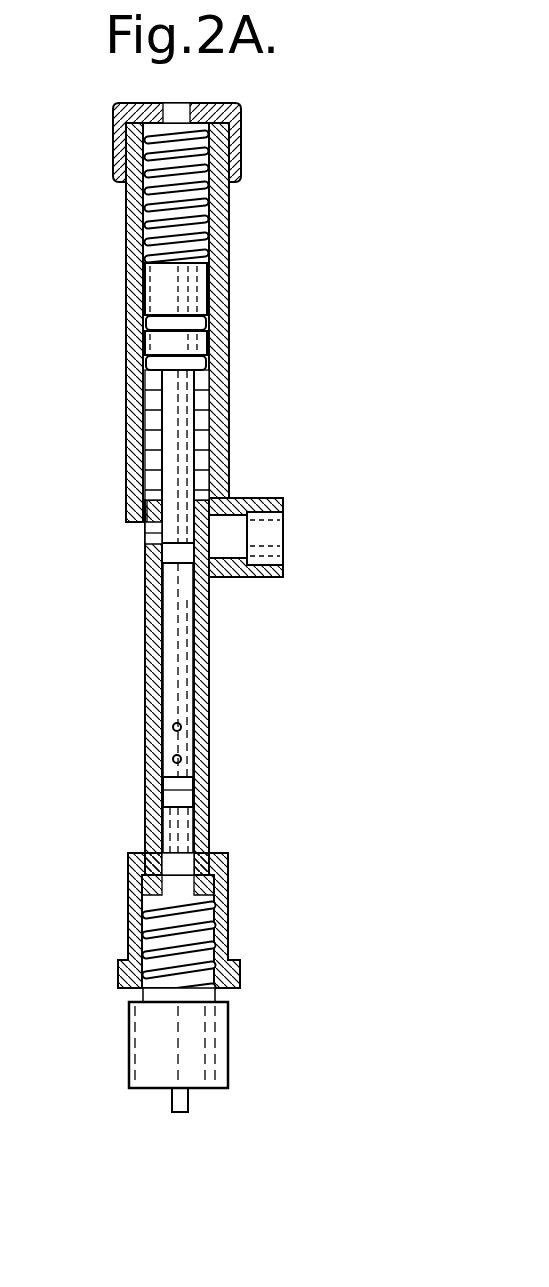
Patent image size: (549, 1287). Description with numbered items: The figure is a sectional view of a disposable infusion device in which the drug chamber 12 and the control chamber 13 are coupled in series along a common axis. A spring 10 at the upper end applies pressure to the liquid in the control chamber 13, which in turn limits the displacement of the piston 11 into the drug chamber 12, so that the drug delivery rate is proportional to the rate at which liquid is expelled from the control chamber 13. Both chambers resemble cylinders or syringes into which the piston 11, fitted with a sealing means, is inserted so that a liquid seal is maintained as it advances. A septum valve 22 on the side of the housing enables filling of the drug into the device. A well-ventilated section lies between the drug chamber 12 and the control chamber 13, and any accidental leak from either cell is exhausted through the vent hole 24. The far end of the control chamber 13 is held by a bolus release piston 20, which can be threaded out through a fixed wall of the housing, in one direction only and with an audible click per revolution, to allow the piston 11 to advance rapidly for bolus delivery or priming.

The spring 10 is at (150, 221).
The piston 11 is at (170, 417).
The drug chamber 12 is at (150, 437).
The control chamber 13 is at (177, 690).
The bolus release piston 20 is at (163, 1046).
The septum valve 22 is at (265, 530).
The vent hole 24 is at (147, 535).